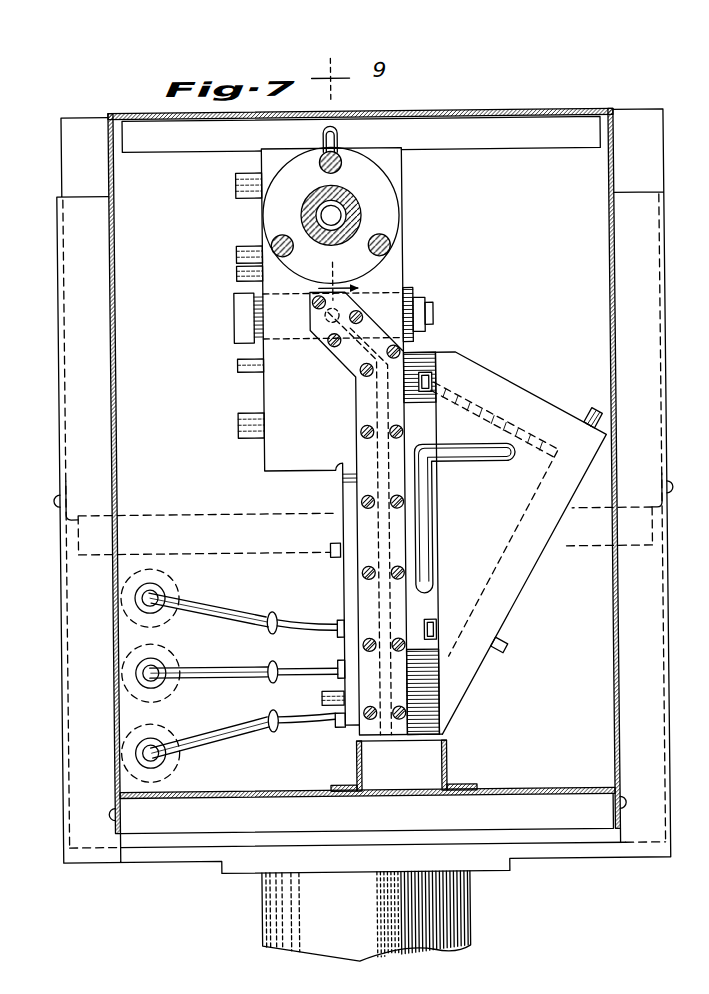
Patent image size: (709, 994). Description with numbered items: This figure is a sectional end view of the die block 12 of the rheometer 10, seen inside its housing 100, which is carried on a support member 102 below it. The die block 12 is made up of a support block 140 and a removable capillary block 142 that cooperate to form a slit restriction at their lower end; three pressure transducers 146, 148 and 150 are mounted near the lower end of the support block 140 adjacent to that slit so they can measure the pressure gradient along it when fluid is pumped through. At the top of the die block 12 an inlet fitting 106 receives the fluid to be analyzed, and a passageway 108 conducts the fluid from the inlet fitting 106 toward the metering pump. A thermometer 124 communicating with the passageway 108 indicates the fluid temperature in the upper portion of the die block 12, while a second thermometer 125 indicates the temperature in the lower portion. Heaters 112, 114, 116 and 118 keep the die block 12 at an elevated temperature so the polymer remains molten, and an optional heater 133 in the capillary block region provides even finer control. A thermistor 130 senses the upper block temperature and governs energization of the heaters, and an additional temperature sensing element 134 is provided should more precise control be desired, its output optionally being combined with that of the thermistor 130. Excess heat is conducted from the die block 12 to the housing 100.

The rheometer 10 is at (580, 96).
The die block 12 is at (521, 275).
The housing 100 is at (461, 112).
The support member 102 is at (258, 918).
The inlet fitting 106 is at (365, 215).
The passageway 108 is at (350, 200).
The heater 112 is at (240, 185).
The heater 114 is at (240, 249).
The heater 116 is at (240, 426).
The heater 118 is at (320, 697).
The thermometer 124 is at (343, 129).
The thermometer 125 is at (462, 457).
The thermistor 130 is at (240, 363).
The heater 133 is at (588, 411).
The temperature sensing element 134 is at (240, 275).
The support block 140 is at (288, 465).
The capillary block 142 is at (529, 551).
The pressure transducer 146 is at (247, 607).
The pressure transducer 148 is at (240, 667).
The pressure transducer 150 is at (240, 723).